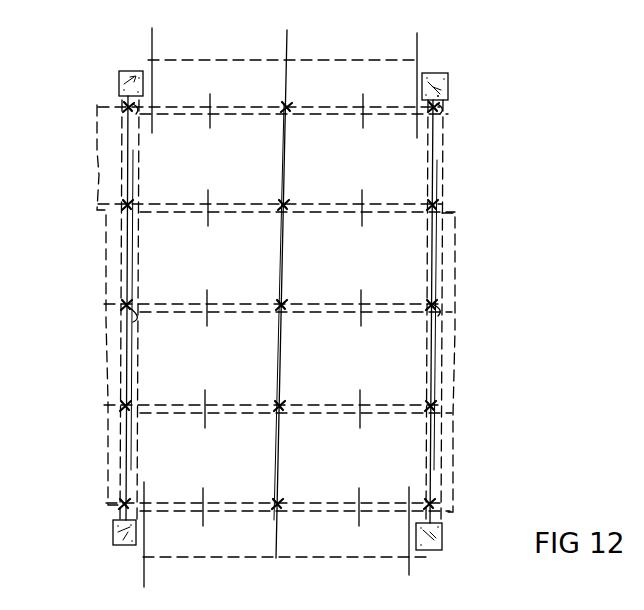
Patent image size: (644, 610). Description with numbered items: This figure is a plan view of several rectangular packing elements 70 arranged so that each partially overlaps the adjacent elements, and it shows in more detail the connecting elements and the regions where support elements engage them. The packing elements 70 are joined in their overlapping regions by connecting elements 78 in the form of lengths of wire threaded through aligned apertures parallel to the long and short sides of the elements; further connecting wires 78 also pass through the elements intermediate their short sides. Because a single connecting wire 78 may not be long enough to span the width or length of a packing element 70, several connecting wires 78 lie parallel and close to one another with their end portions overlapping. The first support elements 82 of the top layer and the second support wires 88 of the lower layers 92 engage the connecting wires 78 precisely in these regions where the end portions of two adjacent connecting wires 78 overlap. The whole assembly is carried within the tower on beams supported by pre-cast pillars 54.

The pre-cast pillar 54 is at (119, 84).
The packing element 70 is at (95, 456).
The connecting element 78 is at (152, 48).
The first support element 82 is at (439, 110).
The second support wire 88 is at (307, 233).
The layer of packing elements 92 is at (256, 308).